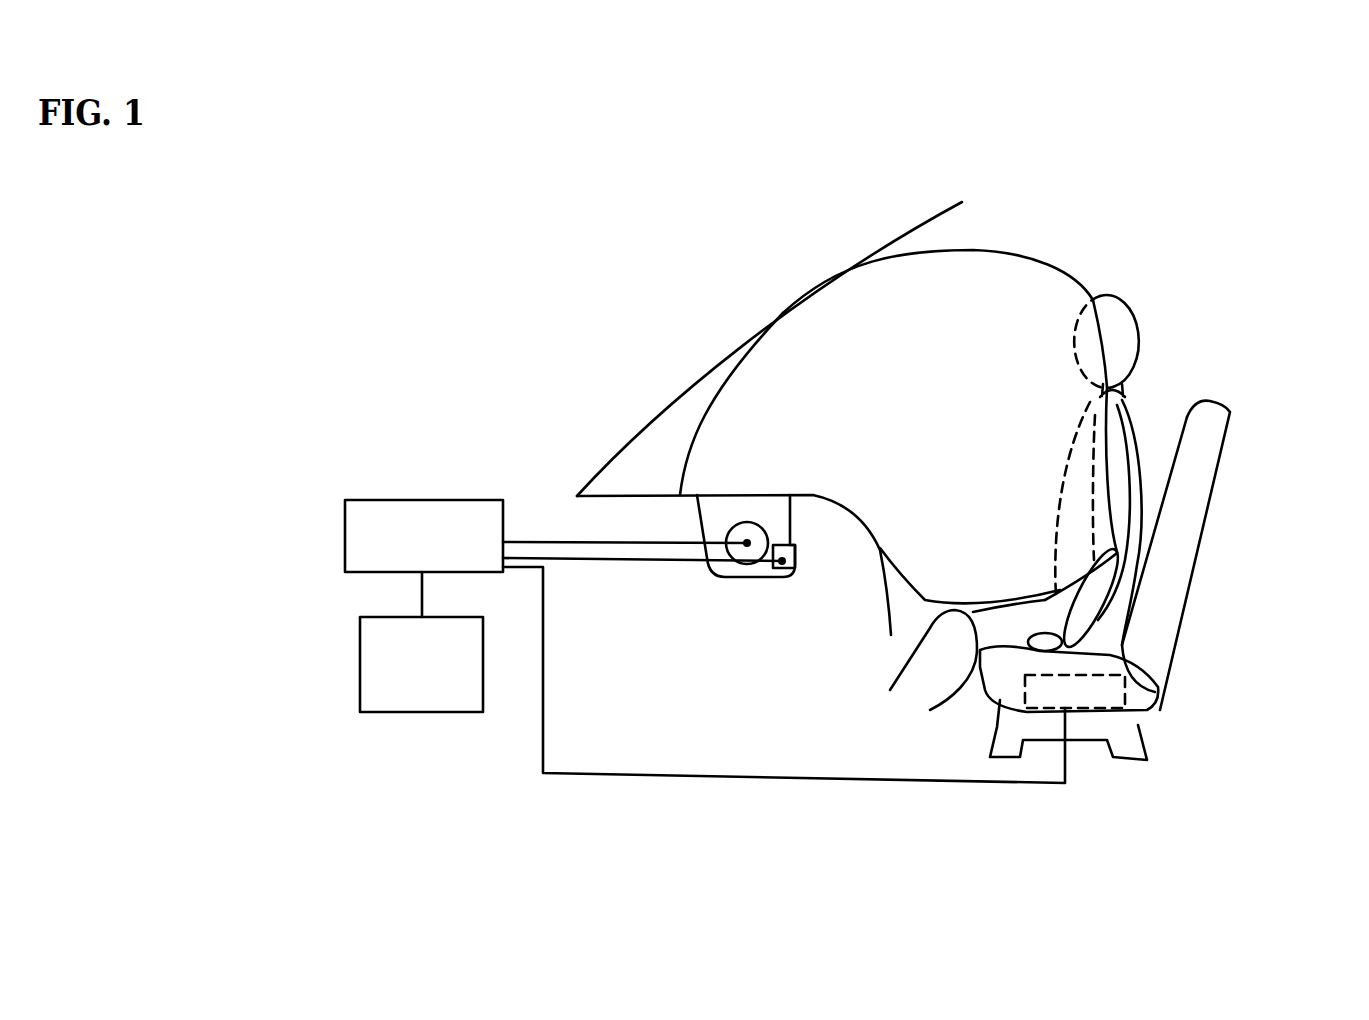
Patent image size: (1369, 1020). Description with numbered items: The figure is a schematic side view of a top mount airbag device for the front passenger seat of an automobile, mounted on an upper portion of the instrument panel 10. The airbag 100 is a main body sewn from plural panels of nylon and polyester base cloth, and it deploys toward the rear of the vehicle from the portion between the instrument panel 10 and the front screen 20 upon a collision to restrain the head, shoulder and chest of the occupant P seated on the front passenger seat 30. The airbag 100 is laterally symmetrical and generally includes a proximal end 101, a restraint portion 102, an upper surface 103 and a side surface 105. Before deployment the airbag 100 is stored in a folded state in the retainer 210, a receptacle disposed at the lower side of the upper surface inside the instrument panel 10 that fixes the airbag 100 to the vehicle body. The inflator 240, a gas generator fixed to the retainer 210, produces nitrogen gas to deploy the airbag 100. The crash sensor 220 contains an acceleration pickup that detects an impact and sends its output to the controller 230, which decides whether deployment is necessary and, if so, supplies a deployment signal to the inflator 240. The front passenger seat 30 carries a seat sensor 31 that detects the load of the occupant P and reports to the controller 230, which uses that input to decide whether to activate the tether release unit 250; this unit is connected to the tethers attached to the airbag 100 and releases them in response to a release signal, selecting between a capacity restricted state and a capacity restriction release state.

The airbag 100 is at (886, 350).
The proximal end 101 is at (688, 443).
The upper surface 103 is at (1027, 257).
The restraint portion 102 is at (1108, 414).
The side surface 105 is at (927, 418).
The instrument panel 10 is at (615, 495).
The front screen 20 is at (622, 447).
The front passenger seat 30 is at (1161, 580).
The seat sensor 31 is at (1125, 690).
The retainer 210 is at (762, 577).
The crash sensor 220 is at (360, 655).
The controller 230 is at (343, 528).
The inflator 240 is at (740, 567).
The tether release unit 250 is at (795, 568).
The occupant P is at (1102, 474).